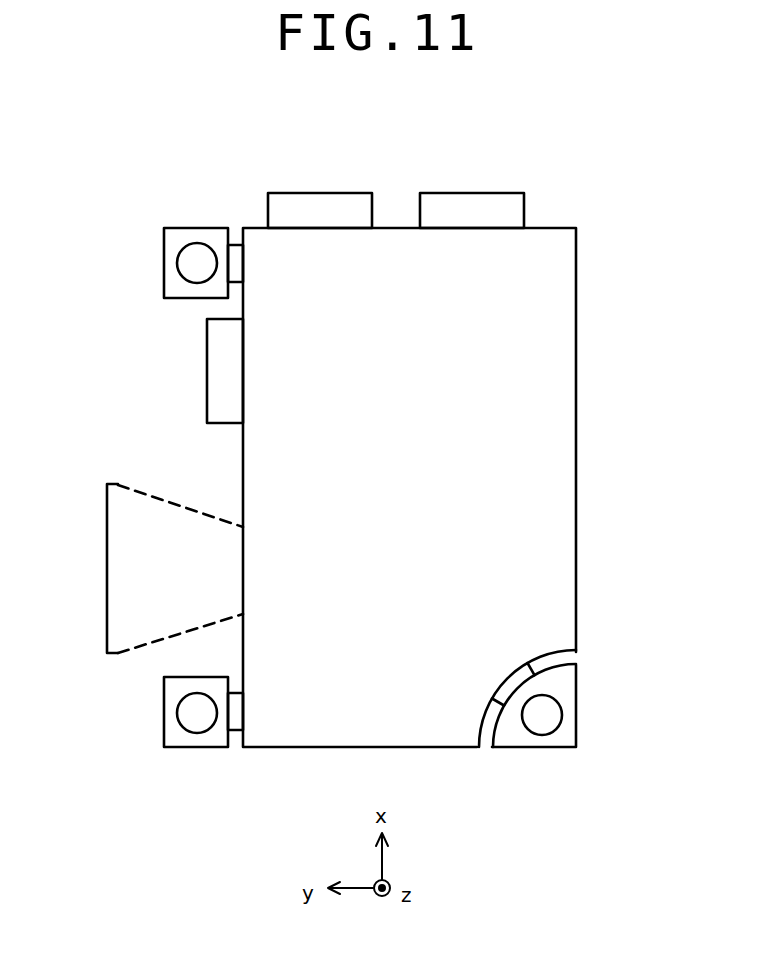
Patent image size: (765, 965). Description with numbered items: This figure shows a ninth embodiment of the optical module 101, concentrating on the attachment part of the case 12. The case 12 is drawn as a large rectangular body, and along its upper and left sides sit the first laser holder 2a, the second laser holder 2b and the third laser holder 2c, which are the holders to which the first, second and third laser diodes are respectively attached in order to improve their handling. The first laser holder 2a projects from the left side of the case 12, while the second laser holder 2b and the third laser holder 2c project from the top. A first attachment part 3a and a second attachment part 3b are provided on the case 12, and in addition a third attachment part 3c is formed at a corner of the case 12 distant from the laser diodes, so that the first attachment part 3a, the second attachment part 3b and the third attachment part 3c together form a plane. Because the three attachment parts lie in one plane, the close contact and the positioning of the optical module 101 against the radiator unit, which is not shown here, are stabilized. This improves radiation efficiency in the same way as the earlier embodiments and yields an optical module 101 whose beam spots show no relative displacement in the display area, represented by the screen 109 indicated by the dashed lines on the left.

The optical module 101 is at (394, 475).
The case 12 is at (560, 357).
The first laser holder 2a is at (213, 358).
The second laser holder 2b is at (318, 208).
The third laser holder 2c is at (483, 208).
The first attachment part 3a is at (192, 262).
The second attachment part 3b is at (540, 717).
The third attachment part 3c is at (203, 715).
The screen 109 is at (143, 568).